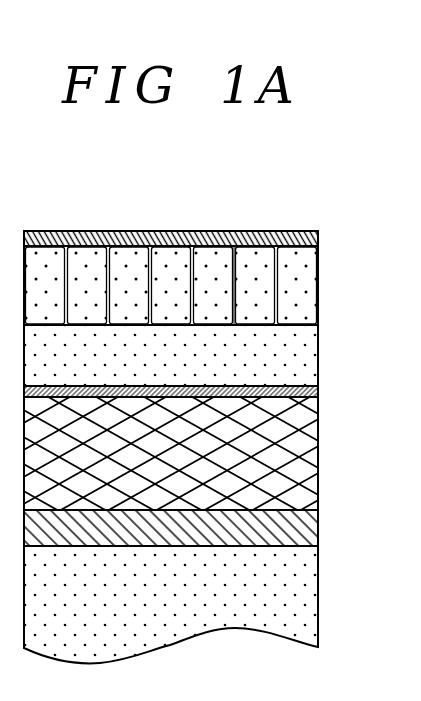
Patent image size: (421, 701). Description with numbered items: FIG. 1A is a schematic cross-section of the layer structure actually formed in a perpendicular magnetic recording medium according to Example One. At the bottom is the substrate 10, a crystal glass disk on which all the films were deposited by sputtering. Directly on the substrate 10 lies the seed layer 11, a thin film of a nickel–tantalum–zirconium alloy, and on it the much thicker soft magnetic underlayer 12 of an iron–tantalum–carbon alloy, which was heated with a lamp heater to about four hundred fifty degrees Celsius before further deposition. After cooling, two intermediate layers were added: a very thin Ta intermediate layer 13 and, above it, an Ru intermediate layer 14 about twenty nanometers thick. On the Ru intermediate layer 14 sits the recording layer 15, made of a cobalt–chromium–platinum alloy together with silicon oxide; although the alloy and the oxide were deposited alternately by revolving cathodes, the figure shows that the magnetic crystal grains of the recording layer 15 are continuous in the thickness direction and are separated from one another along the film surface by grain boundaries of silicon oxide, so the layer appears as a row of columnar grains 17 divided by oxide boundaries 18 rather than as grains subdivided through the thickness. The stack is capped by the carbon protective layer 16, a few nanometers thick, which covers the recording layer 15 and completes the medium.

The substrate 10 is at (305, 583).
The seed layer 11 is at (310, 530).
The soft magnetic underlayer 12 is at (310, 457).
The Ta intermediate layer 13 is at (313, 393).
The Ru intermediate layer 14 is at (307, 355).
The recording layer 15 is at (192, 257).
The carbon protective layer 16 is at (318, 233).
The cell element 17 is at (267, 243).
The partition wall 18 is at (238, 243).